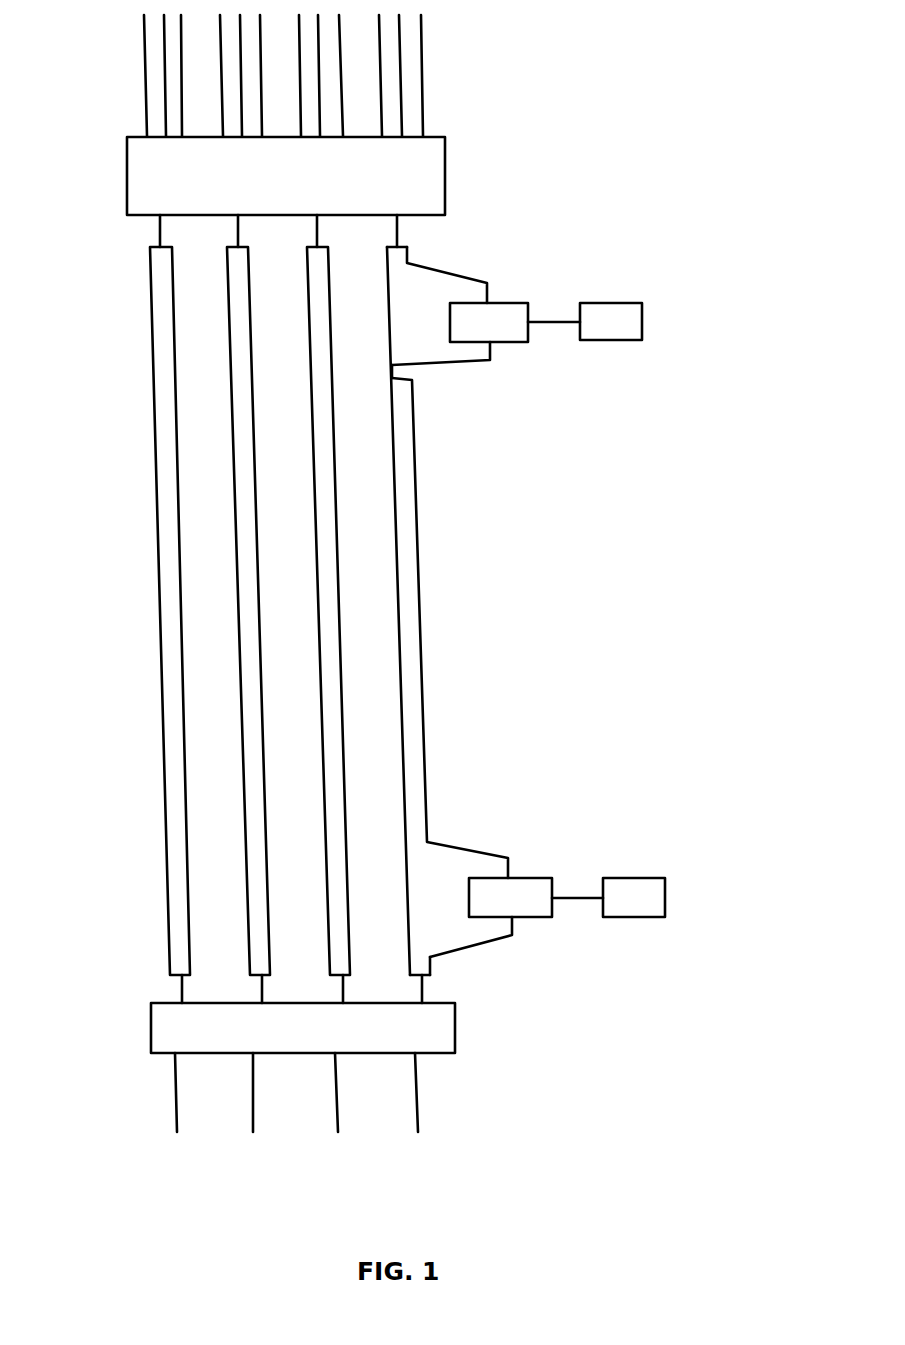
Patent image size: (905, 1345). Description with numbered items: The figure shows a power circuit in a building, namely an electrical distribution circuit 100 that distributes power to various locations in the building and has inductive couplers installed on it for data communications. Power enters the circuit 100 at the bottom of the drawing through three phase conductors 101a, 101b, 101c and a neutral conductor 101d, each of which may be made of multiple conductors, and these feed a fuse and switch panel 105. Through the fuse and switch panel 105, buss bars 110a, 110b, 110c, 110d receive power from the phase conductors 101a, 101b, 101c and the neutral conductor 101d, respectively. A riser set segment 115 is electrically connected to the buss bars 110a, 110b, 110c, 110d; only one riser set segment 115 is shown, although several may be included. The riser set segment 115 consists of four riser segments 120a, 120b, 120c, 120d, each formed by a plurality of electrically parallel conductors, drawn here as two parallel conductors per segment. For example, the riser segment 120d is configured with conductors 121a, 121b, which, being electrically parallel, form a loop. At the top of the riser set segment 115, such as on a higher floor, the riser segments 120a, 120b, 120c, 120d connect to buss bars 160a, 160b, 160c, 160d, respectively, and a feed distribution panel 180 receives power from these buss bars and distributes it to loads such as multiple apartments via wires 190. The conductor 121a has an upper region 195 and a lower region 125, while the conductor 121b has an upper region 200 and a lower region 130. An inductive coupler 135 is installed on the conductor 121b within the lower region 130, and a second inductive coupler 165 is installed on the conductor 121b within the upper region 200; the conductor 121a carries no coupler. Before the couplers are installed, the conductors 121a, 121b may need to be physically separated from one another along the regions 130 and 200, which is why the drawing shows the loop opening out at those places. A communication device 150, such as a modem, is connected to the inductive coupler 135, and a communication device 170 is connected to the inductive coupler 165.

The electrical distribution circuit 100 is at (657, 147).
The phase conductor 101a is at (167, 1110).
The phase conductor 101b is at (245, 1112).
The phase conductor 101c is at (327, 1110).
The neutral conductor 101d is at (428, 1108).
The fuse and switch panel 105 is at (458, 1031).
The buss bar 110a is at (175, 987).
The buss bar 110b is at (262, 988).
The buss bar 110c is at (342, 988).
The buss bar 110d is at (432, 988).
The riser set segment 115 is at (117, 617).
The riser segment 120a is at (155, 698).
The riser segment 120b is at (238, 687).
The riser segment 120c is at (310, 690).
The riser segment 120d is at (443, 611).
The conductor 121a is at (408, 765).
The conductor 121b is at (428, 742).
The lower region 125 is at (415, 933).
The lower region 130 is at (520, 933).
The inductive coupler 135 is at (540, 873).
The communication device 150 is at (673, 883).
The buss bar 160a is at (155, 228).
The buss bar 160b is at (237, 230).
The buss bar 160c is at (313, 228).
The buss bar 160d is at (400, 232).
The inductive coupler 165 is at (532, 298).
The communication device 170 is at (650, 302).
The feed distribution panel 180 is at (450, 170).
The wires 190 is at (435, 100).
The upper region 195 is at (402, 364).
The upper region 200 is at (477, 367).